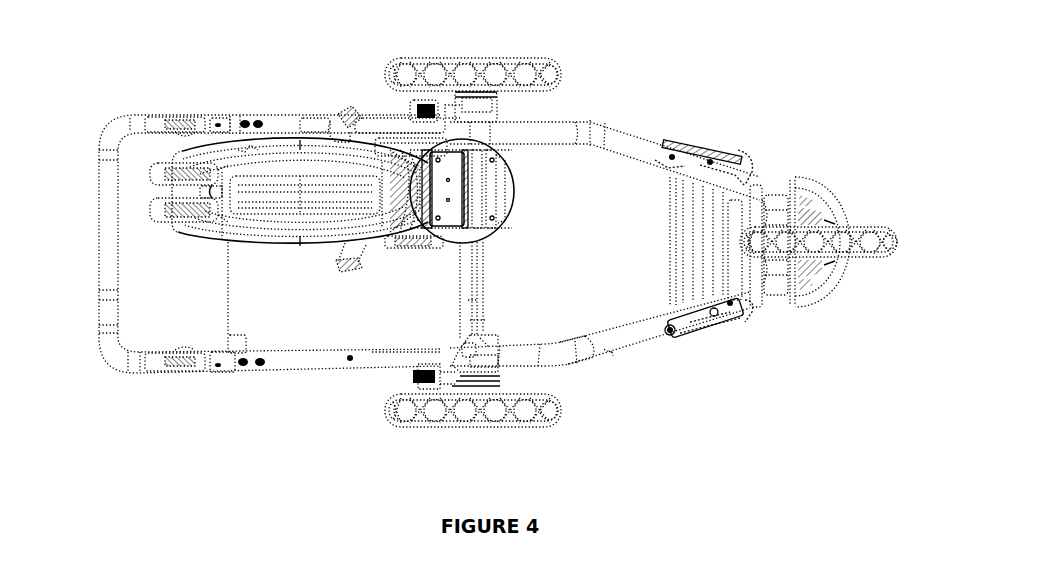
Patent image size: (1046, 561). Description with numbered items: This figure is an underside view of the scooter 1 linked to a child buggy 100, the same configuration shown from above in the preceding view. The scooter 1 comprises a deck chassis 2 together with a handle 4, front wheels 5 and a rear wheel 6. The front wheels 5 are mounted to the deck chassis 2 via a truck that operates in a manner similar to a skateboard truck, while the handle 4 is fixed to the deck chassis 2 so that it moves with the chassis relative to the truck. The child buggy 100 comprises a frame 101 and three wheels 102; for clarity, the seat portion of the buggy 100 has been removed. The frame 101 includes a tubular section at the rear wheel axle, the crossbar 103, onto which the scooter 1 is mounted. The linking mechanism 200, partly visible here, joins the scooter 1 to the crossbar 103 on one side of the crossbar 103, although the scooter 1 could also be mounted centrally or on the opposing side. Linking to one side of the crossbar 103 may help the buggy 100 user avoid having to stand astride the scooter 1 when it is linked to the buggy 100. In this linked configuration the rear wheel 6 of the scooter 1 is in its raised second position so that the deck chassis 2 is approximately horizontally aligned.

The scooter 1 is at (301, 245).
The deck chassis 2 is at (242, 152).
The handle 4 is at (343, 118).
The front wheels 5 is at (400, 142).
The rear wheel 6 is at (182, 190).
The child buggy 100 is at (670, 366).
The frame 101 is at (579, 360).
The wheels 102 is at (509, 70).
The crossbar 103 is at (490, 287).
The linking mechanism 200 is at (504, 156).